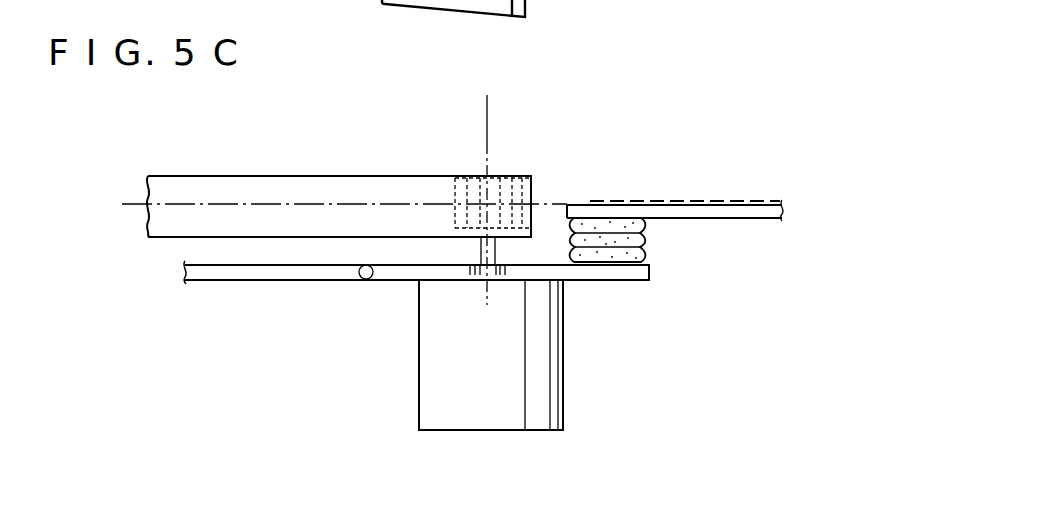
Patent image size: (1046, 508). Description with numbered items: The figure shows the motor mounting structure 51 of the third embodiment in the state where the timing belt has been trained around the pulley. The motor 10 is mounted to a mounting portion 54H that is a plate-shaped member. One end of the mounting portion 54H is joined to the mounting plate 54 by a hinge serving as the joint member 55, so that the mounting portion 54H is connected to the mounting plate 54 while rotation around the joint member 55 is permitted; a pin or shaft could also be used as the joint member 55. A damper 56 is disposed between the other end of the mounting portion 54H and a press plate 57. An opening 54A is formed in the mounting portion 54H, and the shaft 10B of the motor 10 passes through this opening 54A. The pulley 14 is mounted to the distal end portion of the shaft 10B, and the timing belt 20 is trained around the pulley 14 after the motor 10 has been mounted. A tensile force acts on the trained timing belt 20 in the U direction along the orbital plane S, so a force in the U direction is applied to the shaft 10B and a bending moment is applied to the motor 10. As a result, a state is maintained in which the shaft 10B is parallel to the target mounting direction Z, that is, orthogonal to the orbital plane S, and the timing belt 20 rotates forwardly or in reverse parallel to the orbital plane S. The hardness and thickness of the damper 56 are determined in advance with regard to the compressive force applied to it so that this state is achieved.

The motor 10 is at (583, 407).
The shaft 10B is at (481, 250).
The pulley 14 is at (505, 176).
The timing belt 20 is at (226, 176).
The motor mounting structure 51 is at (708, 65).
The mounting plate 54 is at (225, 280).
The opening 54A is at (503, 267).
The mounting portion 54H is at (440, 265).
The joint member 55 is at (350, 265).
The damper 56 is at (648, 247).
The press plate 57 is at (773, 211).
The orbital plane S is at (731, 200).
The U direction U is at (112, 205).
The target mounting direction Z is at (485, 115).